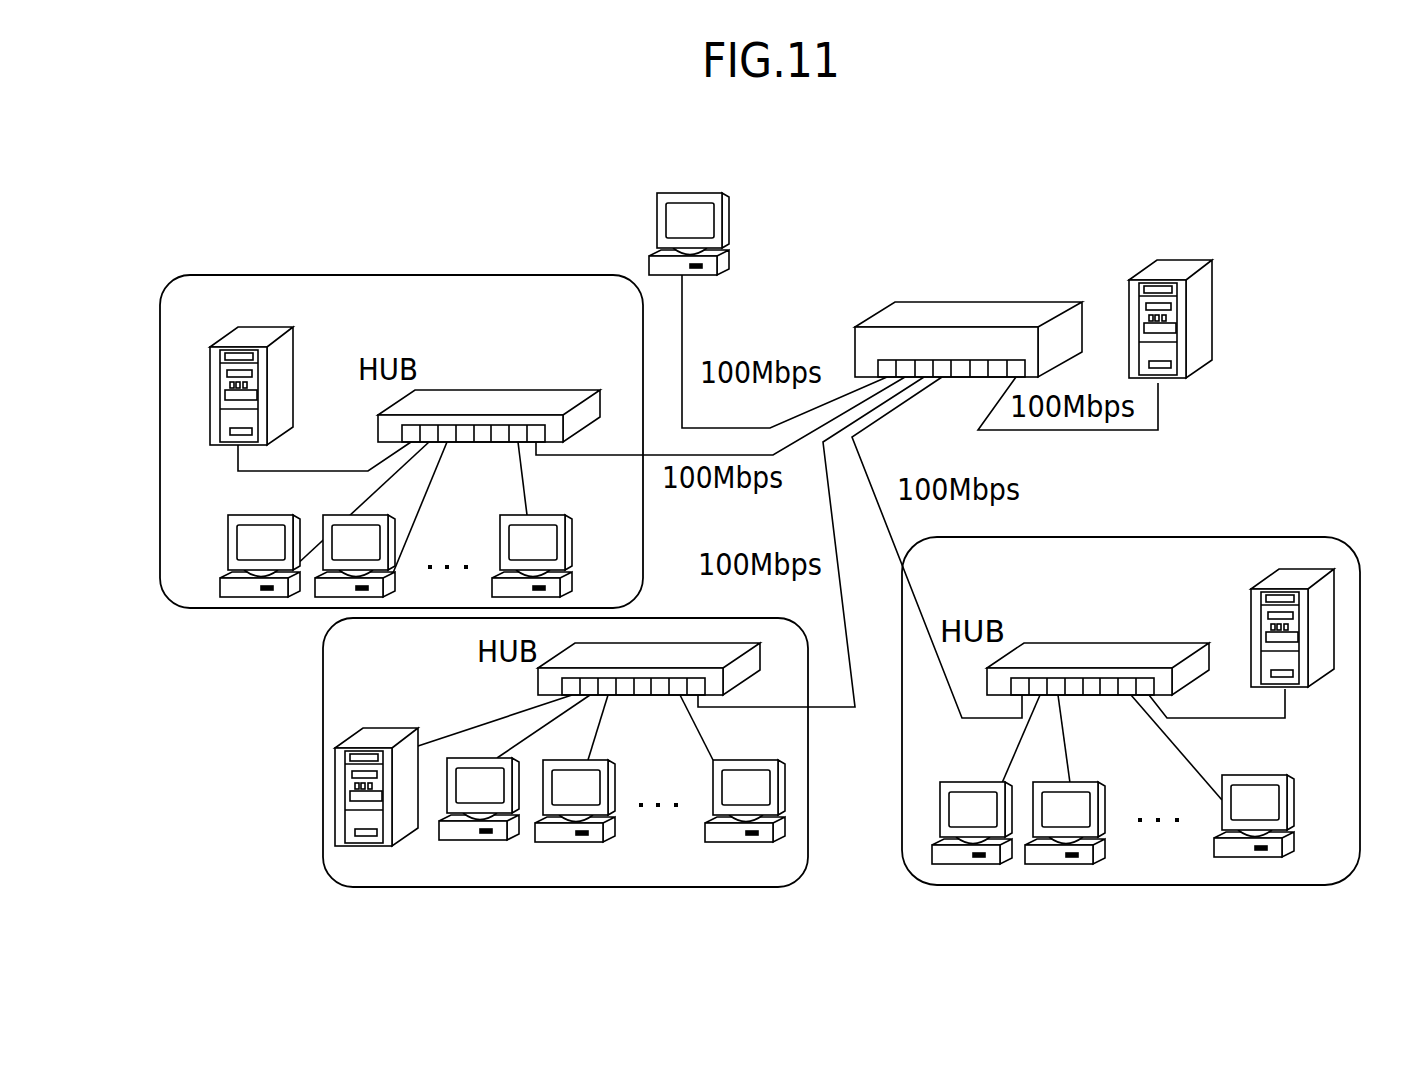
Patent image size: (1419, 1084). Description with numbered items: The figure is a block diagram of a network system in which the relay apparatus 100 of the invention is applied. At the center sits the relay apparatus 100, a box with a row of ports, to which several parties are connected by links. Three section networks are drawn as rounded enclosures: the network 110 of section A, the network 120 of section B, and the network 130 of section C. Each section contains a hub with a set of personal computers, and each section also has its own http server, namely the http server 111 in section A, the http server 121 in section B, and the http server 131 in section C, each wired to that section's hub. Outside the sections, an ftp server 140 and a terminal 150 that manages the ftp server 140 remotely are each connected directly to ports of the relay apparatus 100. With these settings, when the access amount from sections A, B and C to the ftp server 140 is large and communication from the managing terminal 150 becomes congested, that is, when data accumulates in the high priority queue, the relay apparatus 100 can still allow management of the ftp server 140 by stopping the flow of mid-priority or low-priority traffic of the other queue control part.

The relay apparatus 100 is at (1010, 302).
The network of section A 110 is at (275, 273).
The http server of section A 111 is at (293, 362).
The network of section B 120 is at (408, 888).
The http server of section B 121 is at (377, 728).
The network of section C 130 is at (975, 888).
The http server of section C 131 is at (1251, 629).
The ftp server 140 is at (1213, 329).
The terminal 150 is at (727, 228).